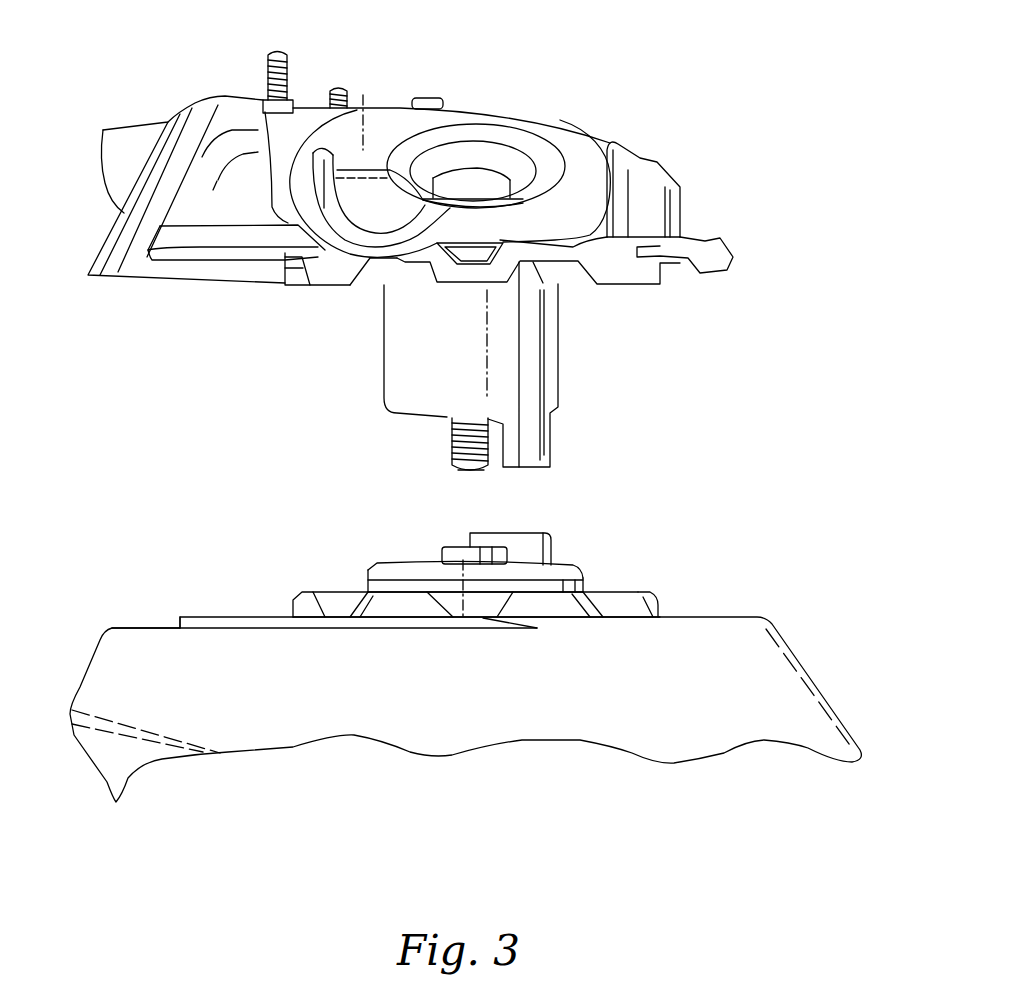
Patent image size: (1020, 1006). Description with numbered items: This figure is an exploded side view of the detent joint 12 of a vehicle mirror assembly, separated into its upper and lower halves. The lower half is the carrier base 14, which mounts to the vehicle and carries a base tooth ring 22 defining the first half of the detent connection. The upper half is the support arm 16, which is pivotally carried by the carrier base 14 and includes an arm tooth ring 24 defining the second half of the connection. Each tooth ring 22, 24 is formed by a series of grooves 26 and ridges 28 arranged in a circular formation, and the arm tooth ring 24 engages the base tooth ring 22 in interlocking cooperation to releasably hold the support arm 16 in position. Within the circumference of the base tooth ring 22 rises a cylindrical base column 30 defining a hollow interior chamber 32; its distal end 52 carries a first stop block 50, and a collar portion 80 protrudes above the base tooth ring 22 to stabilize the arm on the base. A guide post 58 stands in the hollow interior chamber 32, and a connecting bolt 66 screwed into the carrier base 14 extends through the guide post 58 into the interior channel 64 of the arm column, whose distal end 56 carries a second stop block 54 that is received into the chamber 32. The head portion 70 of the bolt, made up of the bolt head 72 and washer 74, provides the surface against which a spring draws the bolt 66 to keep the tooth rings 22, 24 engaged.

The detent joint 12 is at (737, 433).
The carrier base 14 is at (780, 687).
The support arm 16 is at (640, 149).
The base tooth ring 22 is at (653, 581).
The arm tooth ring 24 is at (617, 300).
The grooves 26 is at (320, 290).
The ridges 28 is at (377, 288).
The cylindrical base column 30 is at (368, 582).
The hollow interior chamber 32 is at (397, 558).
The first stop block 50 is at (528, 548).
The distal end of base column 52 is at (587, 571).
The second stop block 54 is at (537, 442).
The distal end of arm column 56 is at (392, 412).
The guide post 58 is at (441, 551).
The interior channel 64 is at (525, 185).
The connecting bolt 66 is at (457, 440).
The head portion 70 is at (485, 165).
The bolt head 72 is at (462, 183).
The washer 74 is at (440, 178).
The collar portion 80 is at (453, 582).